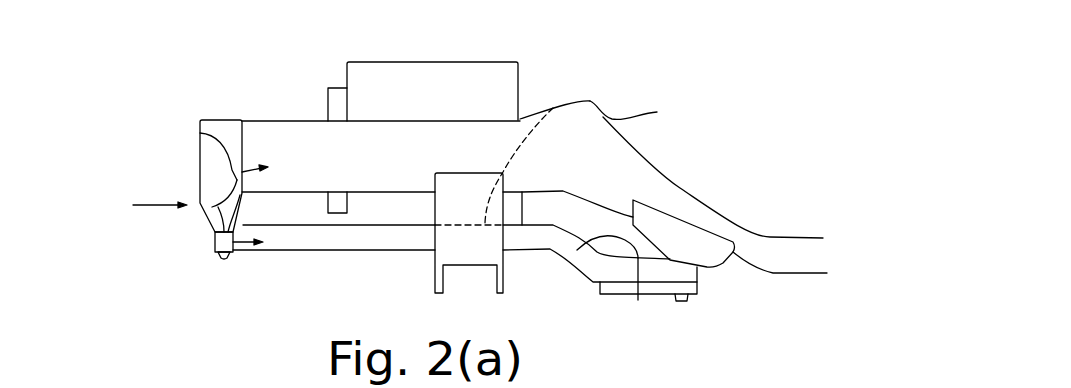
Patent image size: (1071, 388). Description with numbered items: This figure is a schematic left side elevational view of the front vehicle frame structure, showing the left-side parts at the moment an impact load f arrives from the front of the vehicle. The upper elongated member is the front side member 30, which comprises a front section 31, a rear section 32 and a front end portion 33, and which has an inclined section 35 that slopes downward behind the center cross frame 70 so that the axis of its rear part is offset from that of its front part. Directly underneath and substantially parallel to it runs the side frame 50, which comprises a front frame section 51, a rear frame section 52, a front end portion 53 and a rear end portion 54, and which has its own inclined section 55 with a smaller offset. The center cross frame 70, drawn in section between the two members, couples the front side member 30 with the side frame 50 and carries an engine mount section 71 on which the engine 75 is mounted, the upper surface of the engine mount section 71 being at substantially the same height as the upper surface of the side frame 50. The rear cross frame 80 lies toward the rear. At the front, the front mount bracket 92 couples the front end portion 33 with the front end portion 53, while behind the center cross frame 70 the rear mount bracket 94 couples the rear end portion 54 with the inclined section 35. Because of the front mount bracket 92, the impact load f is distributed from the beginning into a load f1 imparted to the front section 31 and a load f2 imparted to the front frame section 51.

The front side member 30 is at (470, 130).
The front section 31 is at (278, 135).
The rear section 32 is at (636, 115).
The front end portion 33 is at (227, 137).
The inclined section 35 is at (620, 202).
The side frame 50 is at (410, 247).
The front frame section 51 is at (287, 249).
The rear frame section 52 is at (603, 267).
The front end portion 53 is at (212, 245).
The rear end portion 54 is at (687, 272).
The inclined section 55 is at (638, 300).
The center cross frame 70 is at (503, 255).
The engine mount section 71 is at (553, 101).
The engine 75 is at (450, 63).
The rear cross frame 80 is at (693, 295).
The front mount bracket 92 is at (210, 177).
The rear mount bracket 94 is at (703, 240).
The impact load f is at (157, 206).
The load f1 is at (200, 133).
The load f2 is at (234, 250).